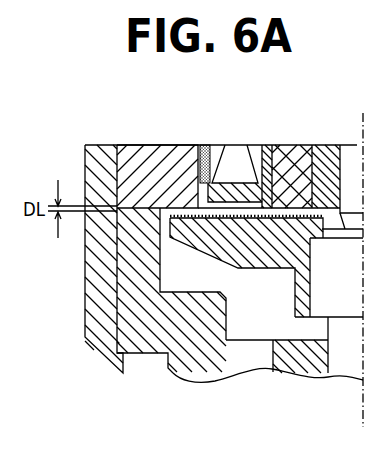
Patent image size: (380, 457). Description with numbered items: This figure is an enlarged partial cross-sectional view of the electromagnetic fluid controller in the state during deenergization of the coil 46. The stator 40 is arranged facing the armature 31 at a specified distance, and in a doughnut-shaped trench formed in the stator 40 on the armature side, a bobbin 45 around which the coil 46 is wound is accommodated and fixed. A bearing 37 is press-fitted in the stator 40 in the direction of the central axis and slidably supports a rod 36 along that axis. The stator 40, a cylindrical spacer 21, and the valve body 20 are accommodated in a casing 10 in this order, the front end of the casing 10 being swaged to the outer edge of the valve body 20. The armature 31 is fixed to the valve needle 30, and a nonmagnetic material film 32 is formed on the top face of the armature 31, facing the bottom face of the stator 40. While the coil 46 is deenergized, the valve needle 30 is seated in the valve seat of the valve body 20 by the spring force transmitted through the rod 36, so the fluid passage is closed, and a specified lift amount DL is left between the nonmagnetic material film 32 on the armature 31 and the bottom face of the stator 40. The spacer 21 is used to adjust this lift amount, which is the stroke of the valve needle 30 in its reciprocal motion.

The casing 10 is at (85, 168).
The valve body 20 is at (137, 307).
The spacer 21 is at (112, 258).
The valve needle 30 is at (316, 318).
The armature 31 is at (272, 255).
The nonmagnetic material film 32 is at (187, 203).
The rod 36 is at (345, 167).
The bearing 37 is at (328, 157).
The stator 40 is at (128, 152).
The bobbin 45 is at (259, 142).
The coil 46 is at (224, 146).